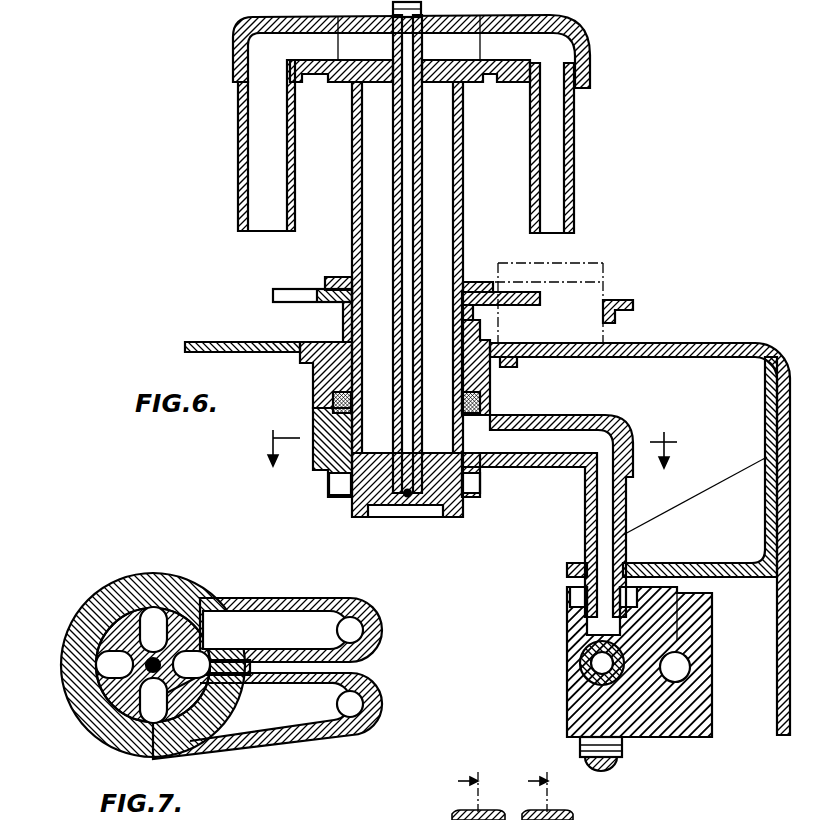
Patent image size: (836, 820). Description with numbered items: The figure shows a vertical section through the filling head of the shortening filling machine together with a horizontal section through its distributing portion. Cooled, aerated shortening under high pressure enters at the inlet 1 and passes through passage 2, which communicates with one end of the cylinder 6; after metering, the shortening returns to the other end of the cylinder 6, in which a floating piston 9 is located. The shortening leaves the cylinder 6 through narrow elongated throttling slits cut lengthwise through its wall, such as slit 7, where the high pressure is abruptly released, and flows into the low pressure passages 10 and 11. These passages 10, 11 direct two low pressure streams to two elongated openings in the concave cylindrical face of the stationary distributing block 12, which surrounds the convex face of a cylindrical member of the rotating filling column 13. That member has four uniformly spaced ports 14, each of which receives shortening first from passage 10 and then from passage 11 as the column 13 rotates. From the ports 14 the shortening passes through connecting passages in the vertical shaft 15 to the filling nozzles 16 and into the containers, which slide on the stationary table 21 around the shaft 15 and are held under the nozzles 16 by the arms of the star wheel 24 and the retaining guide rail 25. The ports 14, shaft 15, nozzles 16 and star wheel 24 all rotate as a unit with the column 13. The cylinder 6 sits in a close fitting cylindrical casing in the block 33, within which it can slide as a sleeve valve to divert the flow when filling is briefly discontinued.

In FIG. 6, the inlet 1 is at (622, 750).
In FIG. 6, the passage 2 is at (690, 665).
In FIG. 6, the cylinder 6 is at (580, 662).
In FIG. 6, the throttling slit 7 is at (472, 449).
In FIG. 6, the floating piston 9 is at (505, 796).
In FIG. 6, the low pressure passage 10 is at (563, 455).
In FIG. 7, the low pressure passage 10 is at (330, 712).
In FIG. 7, the low pressure passage 11 is at (330, 612).
In FIG. 6, the distributing block 12 is at (322, 475).
In FIG. 7, the distributing block 12 is at (100, 595).
In FIG. 6, the filling column 13 is at (478, 84).
In FIG. 6, the port 14 is at (408, 441).
In FIG. 7, the port 14 is at (160, 612).
In FIG. 6, the vertical shaft 15 is at (352, 170).
In FIG. 7, the vertical shaft 15 is at (95, 698).
In FIG. 6, the filling nozzle 16 is at (238, 128).
In FIG. 6, the stationary table 21 is at (228, 342).
In FIG. 6, the star wheel 24 is at (540, 298).
In FIG. 6, the retaining guide rail 25 is at (633, 300).
In FIG. 6, the block 33 is at (567, 700).